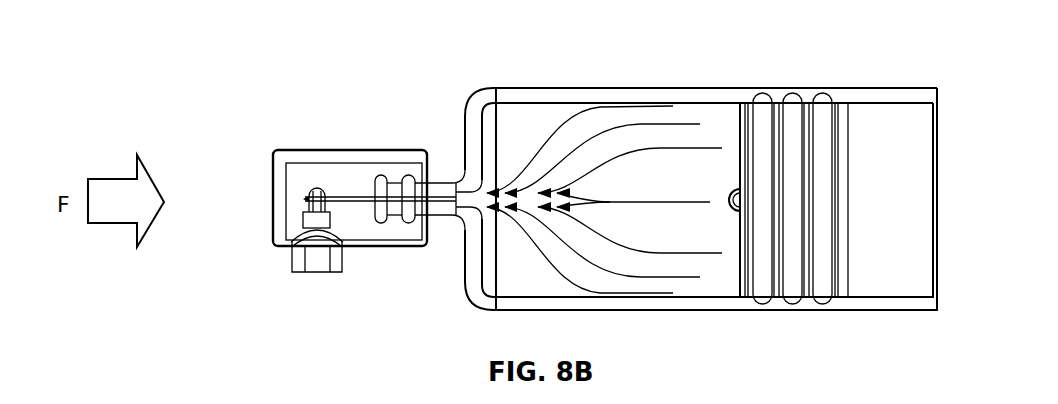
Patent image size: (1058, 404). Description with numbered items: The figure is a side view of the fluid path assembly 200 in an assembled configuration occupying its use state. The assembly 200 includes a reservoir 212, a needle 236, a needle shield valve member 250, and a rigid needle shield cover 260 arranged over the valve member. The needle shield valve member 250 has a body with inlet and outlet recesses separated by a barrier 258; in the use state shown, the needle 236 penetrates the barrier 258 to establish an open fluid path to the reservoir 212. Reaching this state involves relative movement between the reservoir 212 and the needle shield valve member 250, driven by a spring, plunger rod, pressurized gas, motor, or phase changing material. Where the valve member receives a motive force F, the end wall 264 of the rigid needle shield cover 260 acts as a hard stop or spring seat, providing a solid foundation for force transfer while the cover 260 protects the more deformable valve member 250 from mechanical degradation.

The fluid path assembly 200 is at (150, 73).
The reservoir 212 is at (676, 82).
The needle 236 is at (372, 185).
The needle shield valve member 250 is at (294, 179).
The barrier 258 is at (347, 191).
The needle shield cover 260 is at (298, 143).
The end wall 264 is at (273, 216).